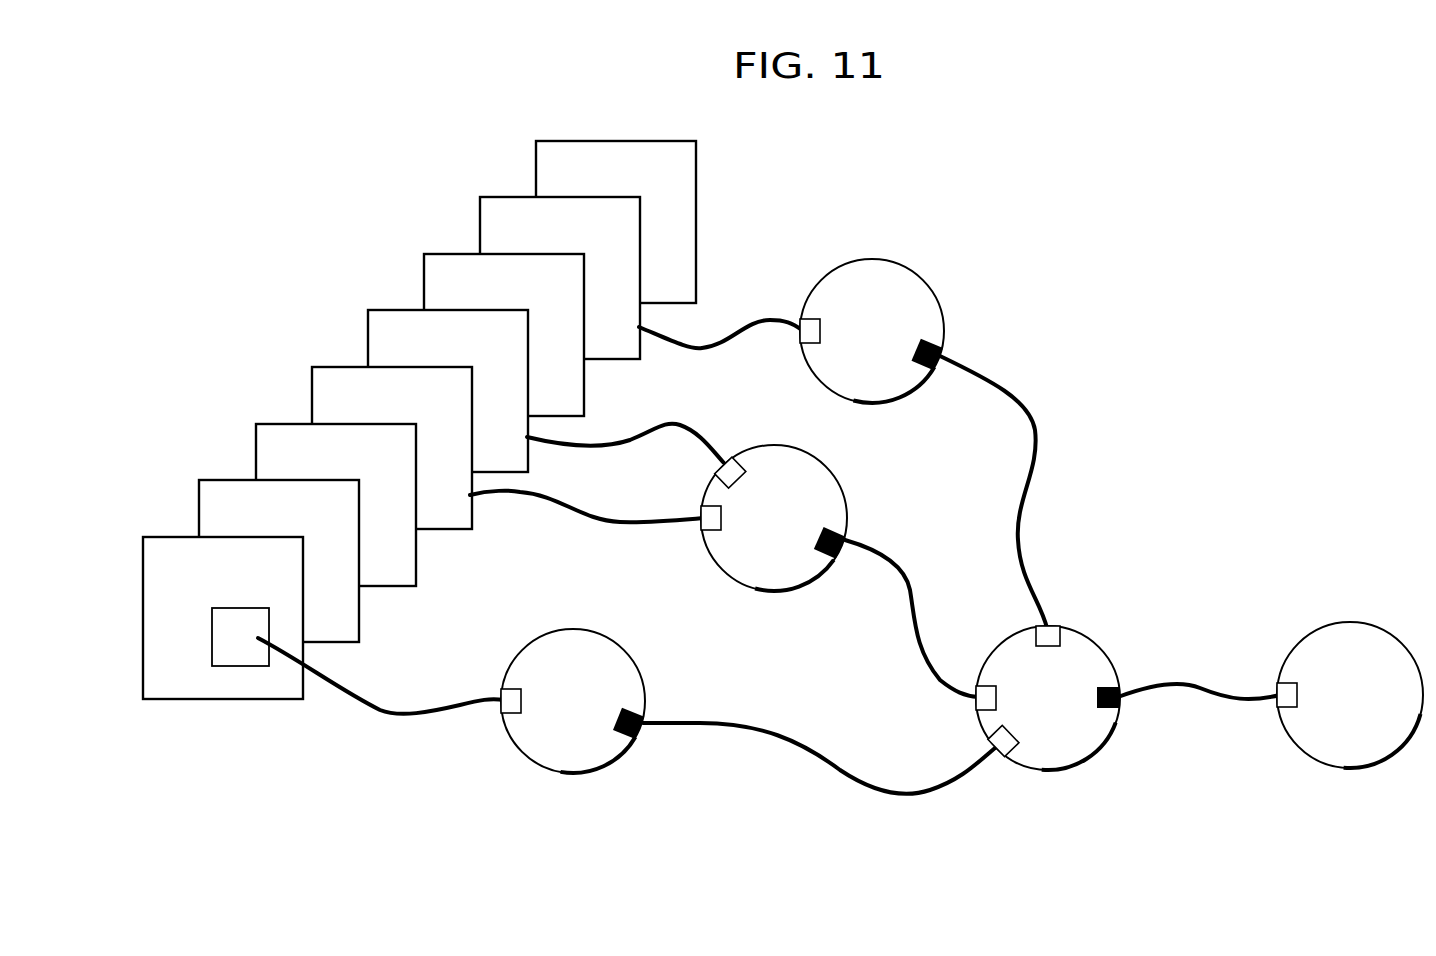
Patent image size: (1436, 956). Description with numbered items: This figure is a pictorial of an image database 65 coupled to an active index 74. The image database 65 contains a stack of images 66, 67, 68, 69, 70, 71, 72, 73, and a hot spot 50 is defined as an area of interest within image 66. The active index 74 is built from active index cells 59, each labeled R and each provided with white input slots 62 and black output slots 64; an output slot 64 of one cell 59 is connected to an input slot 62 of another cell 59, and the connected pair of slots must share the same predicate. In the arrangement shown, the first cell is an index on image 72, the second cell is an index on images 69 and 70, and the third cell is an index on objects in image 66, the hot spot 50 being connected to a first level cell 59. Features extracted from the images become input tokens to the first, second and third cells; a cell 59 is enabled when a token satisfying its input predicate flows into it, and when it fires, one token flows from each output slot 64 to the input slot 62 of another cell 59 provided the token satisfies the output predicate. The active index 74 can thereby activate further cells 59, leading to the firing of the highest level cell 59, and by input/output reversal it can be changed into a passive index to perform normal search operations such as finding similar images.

The hot spot 50 is at (244, 653).
The active index cell 59 is at (873, 259).
The input slot 62 is at (800, 342).
The output slot 64 is at (943, 357).
The image database 65 is at (453, 131).
The image 66 is at (223, 647).
The image 67 is at (279, 561).
The image 68 is at (336, 505).
The image 69 is at (392, 448).
The image 70 is at (448, 391).
The image 71 is at (504, 335).
The image 72 is at (560, 278).
The image 73 is at (616, 222).
The active index 74 is at (1243, 872).